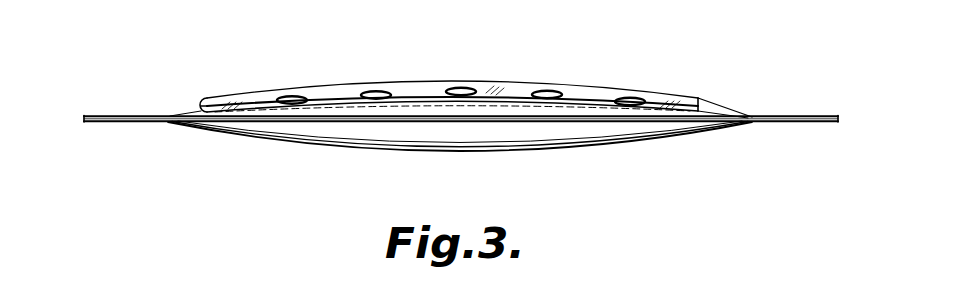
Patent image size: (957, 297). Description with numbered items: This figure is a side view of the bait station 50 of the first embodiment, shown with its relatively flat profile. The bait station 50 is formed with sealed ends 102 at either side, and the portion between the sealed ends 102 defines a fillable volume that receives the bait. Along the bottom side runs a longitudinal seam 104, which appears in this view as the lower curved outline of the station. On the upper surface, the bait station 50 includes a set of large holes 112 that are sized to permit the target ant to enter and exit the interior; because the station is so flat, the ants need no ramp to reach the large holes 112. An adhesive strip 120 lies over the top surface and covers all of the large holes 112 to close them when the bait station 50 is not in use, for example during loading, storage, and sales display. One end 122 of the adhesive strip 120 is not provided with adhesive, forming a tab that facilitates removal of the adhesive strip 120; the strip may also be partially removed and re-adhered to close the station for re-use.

The bait station 50 is at (786, 84).
The sealed ends 102 is at (90, 115).
The longitudinal seam 104 is at (731, 127).
The large holes 112 is at (292, 99).
The adhesive strip 120 is at (689, 100).
The end of the adhesive strip 122 is at (213, 102).